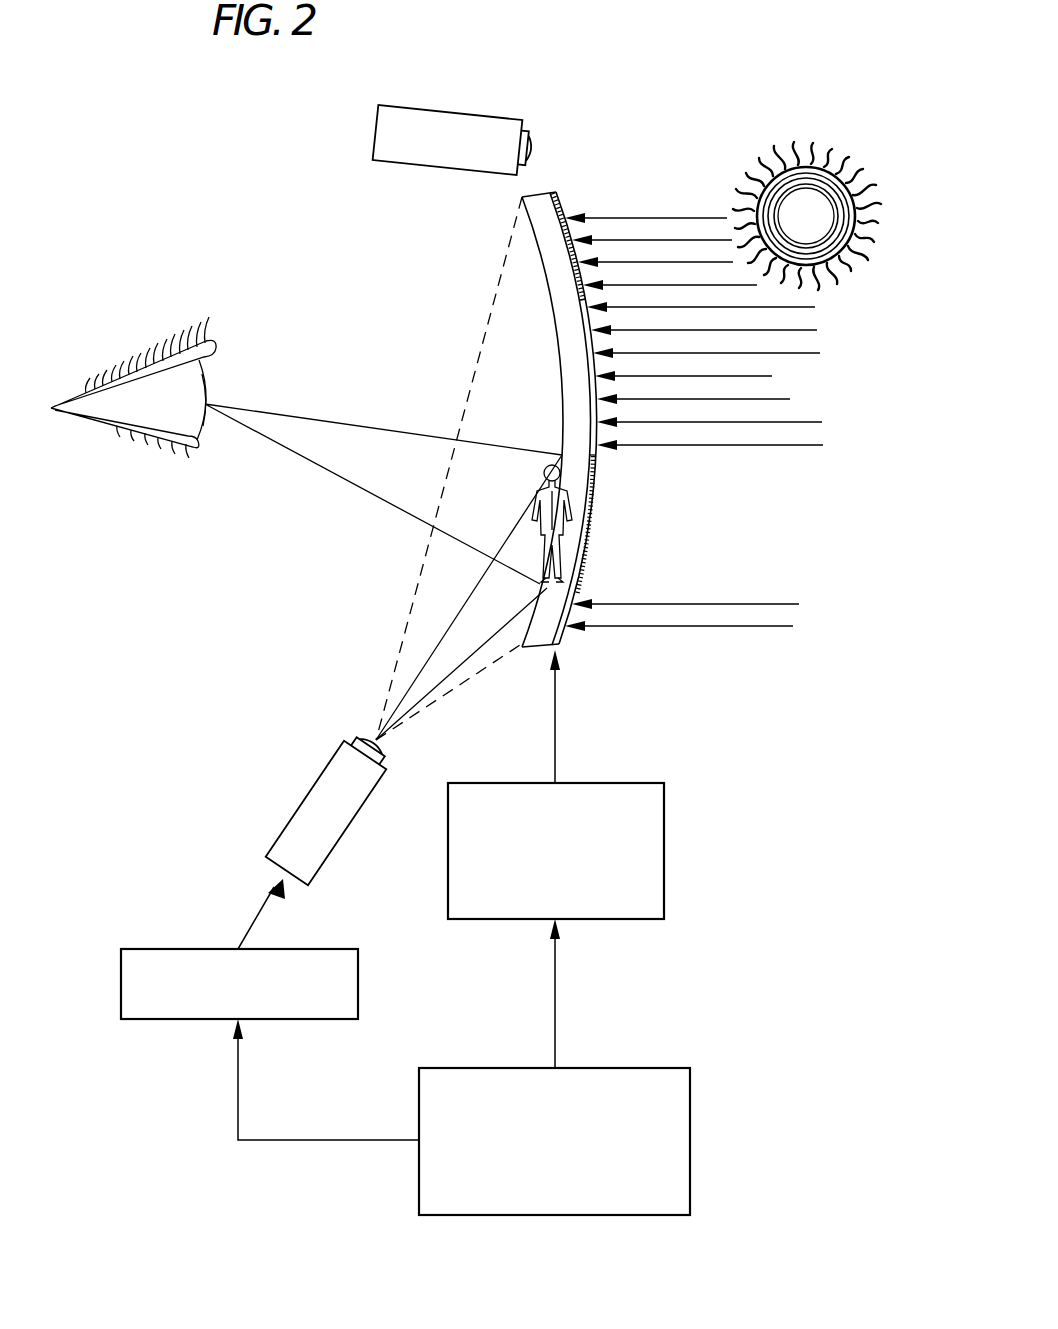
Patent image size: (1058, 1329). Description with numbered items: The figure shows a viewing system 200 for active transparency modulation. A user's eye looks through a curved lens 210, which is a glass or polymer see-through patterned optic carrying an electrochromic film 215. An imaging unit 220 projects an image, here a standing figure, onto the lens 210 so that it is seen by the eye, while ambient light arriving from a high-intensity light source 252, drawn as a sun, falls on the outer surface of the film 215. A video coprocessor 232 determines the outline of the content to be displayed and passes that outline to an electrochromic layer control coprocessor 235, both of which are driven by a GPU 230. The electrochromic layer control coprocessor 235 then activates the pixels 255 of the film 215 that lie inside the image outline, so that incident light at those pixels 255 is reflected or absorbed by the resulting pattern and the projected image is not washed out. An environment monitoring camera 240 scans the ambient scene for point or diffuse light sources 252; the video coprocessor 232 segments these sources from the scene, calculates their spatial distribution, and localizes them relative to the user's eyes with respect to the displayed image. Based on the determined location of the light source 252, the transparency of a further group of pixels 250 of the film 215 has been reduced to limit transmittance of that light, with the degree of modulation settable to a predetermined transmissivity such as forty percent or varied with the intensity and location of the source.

The viewing system 200 is at (225, 162).
The lens 210 is at (532, 197).
The electrochromic film 215 is at (557, 203).
The imaging unit 220 is at (307, 795).
The GPU 230 is at (690, 1138).
The video coprocessor 232 is at (173, 949).
The electrochromic layer control coprocessor 235 is at (665, 850).
The environment monitoring camera 240 is at (455, 113).
The pixels 250 is at (573, 267).
The light source 252 is at (852, 182).
The pixels 255 is at (590, 458).